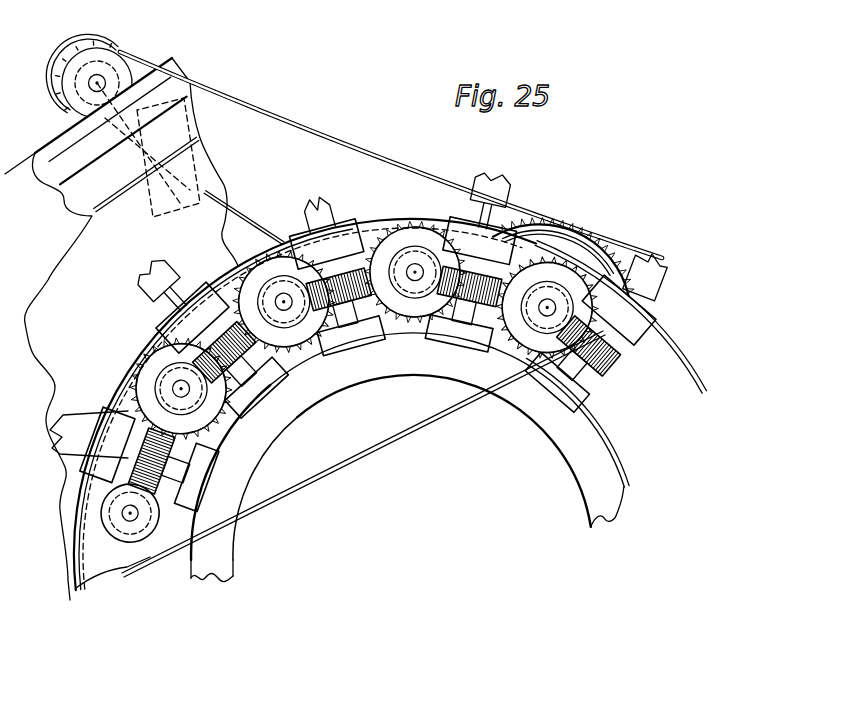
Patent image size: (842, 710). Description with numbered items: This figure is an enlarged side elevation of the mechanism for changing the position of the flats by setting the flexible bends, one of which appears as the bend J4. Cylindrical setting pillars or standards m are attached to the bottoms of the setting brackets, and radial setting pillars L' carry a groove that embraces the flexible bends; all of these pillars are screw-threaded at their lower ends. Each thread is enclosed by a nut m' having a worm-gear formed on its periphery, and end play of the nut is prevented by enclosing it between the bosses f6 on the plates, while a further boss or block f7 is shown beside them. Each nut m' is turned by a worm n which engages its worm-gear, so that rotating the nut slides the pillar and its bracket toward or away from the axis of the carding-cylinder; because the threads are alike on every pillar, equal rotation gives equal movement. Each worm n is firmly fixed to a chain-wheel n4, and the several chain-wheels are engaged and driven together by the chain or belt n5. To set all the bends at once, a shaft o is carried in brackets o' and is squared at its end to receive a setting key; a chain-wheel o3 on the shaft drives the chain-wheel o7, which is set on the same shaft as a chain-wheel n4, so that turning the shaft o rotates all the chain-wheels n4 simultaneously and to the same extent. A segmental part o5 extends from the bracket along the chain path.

The bracket arm J4 is at (117, 135).
The bracket o' is at (148, 150).
The chain-wheel o3 is at (70, 84).
The shaft o is at (73, 105).
The connecting bar o5 is at (393, 176).
The chain-wheel o7 is at (578, 240).
The chain n5 is at (363, 454).
The chain-wheel n4 is at (240, 292).
The worm n is at (407, 257).
The nut m' is at (387, 380).
The boss f6 is at (647, 343).
The bearing block f7 is at (447, 335).
The setting pillar m is at (356, 333).
The radial setting pillar L' is at (318, 243).